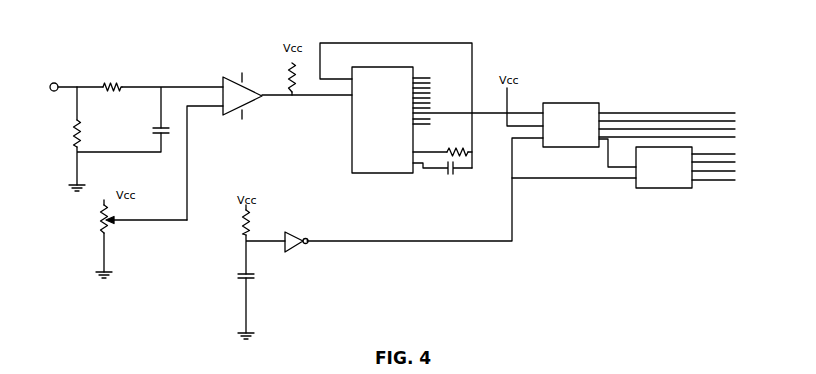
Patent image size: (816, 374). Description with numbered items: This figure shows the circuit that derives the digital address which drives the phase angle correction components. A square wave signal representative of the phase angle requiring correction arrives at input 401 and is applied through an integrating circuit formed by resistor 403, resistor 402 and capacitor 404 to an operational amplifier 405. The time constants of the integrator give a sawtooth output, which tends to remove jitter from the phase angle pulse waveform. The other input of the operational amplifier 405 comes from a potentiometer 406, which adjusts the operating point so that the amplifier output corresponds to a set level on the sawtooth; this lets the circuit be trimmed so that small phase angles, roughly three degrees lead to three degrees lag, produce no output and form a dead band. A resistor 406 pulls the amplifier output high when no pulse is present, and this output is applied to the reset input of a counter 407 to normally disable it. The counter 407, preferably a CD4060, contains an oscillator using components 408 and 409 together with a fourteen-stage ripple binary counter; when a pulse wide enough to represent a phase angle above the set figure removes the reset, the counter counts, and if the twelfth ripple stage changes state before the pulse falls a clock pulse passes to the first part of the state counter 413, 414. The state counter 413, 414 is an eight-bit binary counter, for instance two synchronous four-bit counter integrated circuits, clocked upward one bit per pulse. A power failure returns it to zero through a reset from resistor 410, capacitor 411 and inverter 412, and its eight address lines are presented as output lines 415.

The input 401 is at (58, 78).
The integrating circuit resistor 402 is at (122, 80).
The integrating circuit resistor 403 is at (67, 125).
The integrating circuit capacitor 404 is at (144, 123).
The operational amplifier 405 is at (228, 72).
The potentiometer 406 is at (295, 65).
The counter 407 is at (362, 140).
The oscillator component 408 is at (440, 173).
The oscillator component 409 is at (456, 157).
The resistor 410 is at (235, 218).
The capacitor 411 is at (236, 277).
The inverter 412 is at (305, 248).
The state counter first part 413 is at (573, 103).
The state counter second part 414 is at (509, 98).
The output lines 415 is at (743, 135).